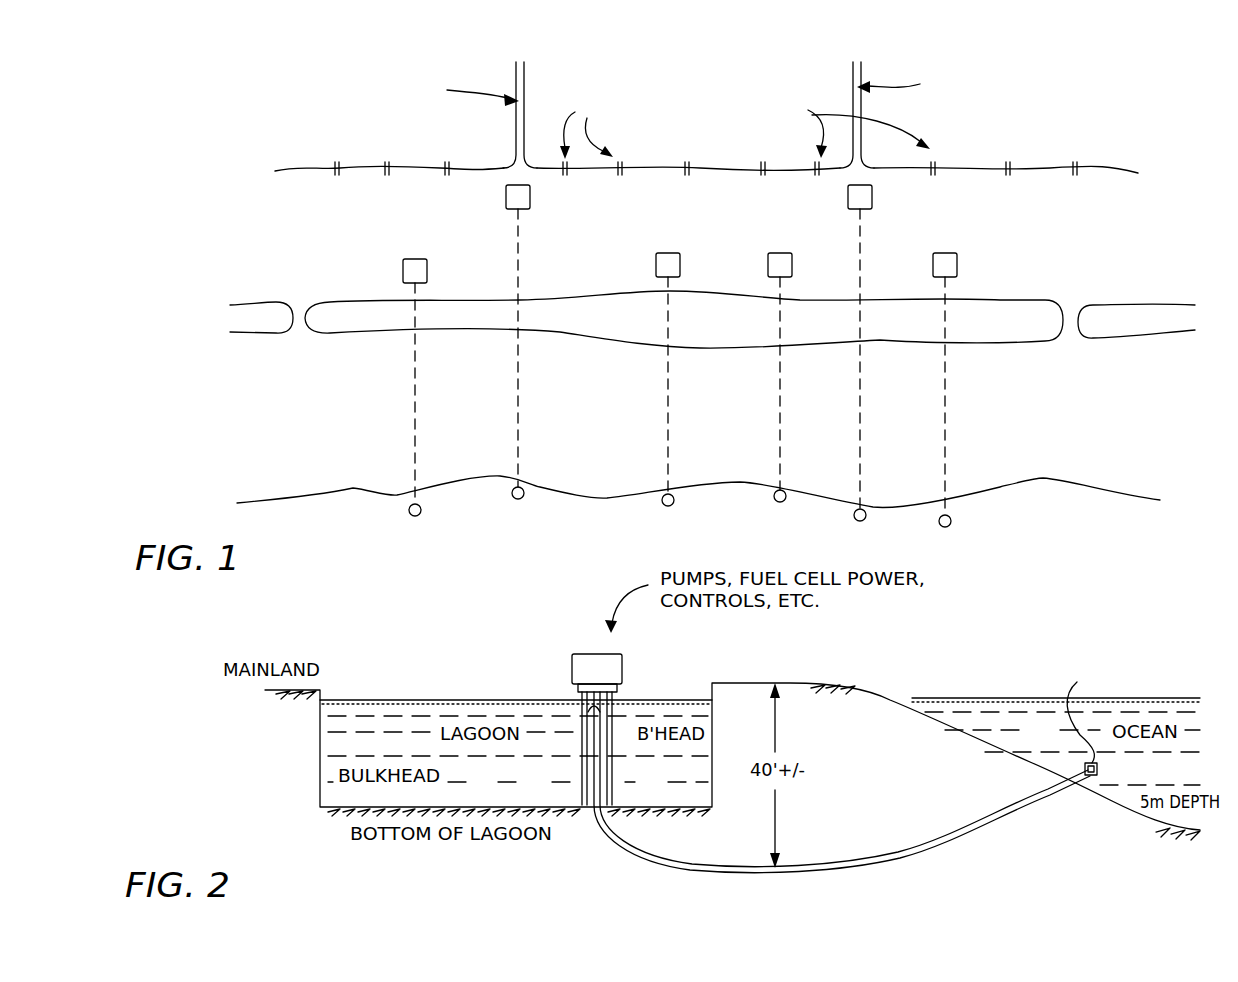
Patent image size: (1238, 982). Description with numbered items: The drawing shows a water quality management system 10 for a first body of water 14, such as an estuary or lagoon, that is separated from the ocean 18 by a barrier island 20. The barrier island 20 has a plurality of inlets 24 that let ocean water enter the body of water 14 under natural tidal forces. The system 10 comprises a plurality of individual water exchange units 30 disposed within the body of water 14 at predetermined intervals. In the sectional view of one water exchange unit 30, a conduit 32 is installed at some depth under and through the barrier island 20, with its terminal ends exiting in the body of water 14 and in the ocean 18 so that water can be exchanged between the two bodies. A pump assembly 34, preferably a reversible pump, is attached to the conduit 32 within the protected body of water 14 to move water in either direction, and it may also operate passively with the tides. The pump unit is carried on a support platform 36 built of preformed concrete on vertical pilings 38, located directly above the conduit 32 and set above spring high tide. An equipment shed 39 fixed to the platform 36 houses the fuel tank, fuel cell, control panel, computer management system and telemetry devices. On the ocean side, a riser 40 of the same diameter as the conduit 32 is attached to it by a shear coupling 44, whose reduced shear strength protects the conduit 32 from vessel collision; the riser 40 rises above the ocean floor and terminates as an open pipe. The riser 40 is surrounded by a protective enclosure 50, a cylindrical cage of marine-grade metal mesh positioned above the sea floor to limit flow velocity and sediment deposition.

In FIG. 1, the water quality management system 10 is at (174, 155).
In FIG. 1, the first body of water 14 is at (382, 257).
In FIG. 2, the first body of water 14 is at (493, 781).
In FIG. 1, the ocean 18 is at (377, 420).
In FIG. 2, the ocean 18 is at (1053, 745).
In FIG. 1, the barrier island 20 is at (265, 327).
In FIG. 2, the barrier island 20 is at (887, 683).
In FIG. 1, the inlets 24 is at (288, 343).
In FIG. 1, the water exchange unit 30 is at (506, 200).
In FIG. 2, the water exchange unit 30 is at (556, 678).
In FIG. 2, the conduit 32 is at (955, 842).
In FIG. 2, the pump assembly 34 is at (603, 667).
In FIG. 2, the support platform 36 is at (622, 727).
In FIG. 2, the vertical pilings 38 is at (583, 778).
In FIG. 2, the equipment shed 39 is at (588, 654).
In FIG. 2, the riser 40 is at (1083, 768).
In FIG. 2, the shear coupling 44 is at (1093, 778).
In FIG. 2, the protective enclosure 50 is at (1086, 715).